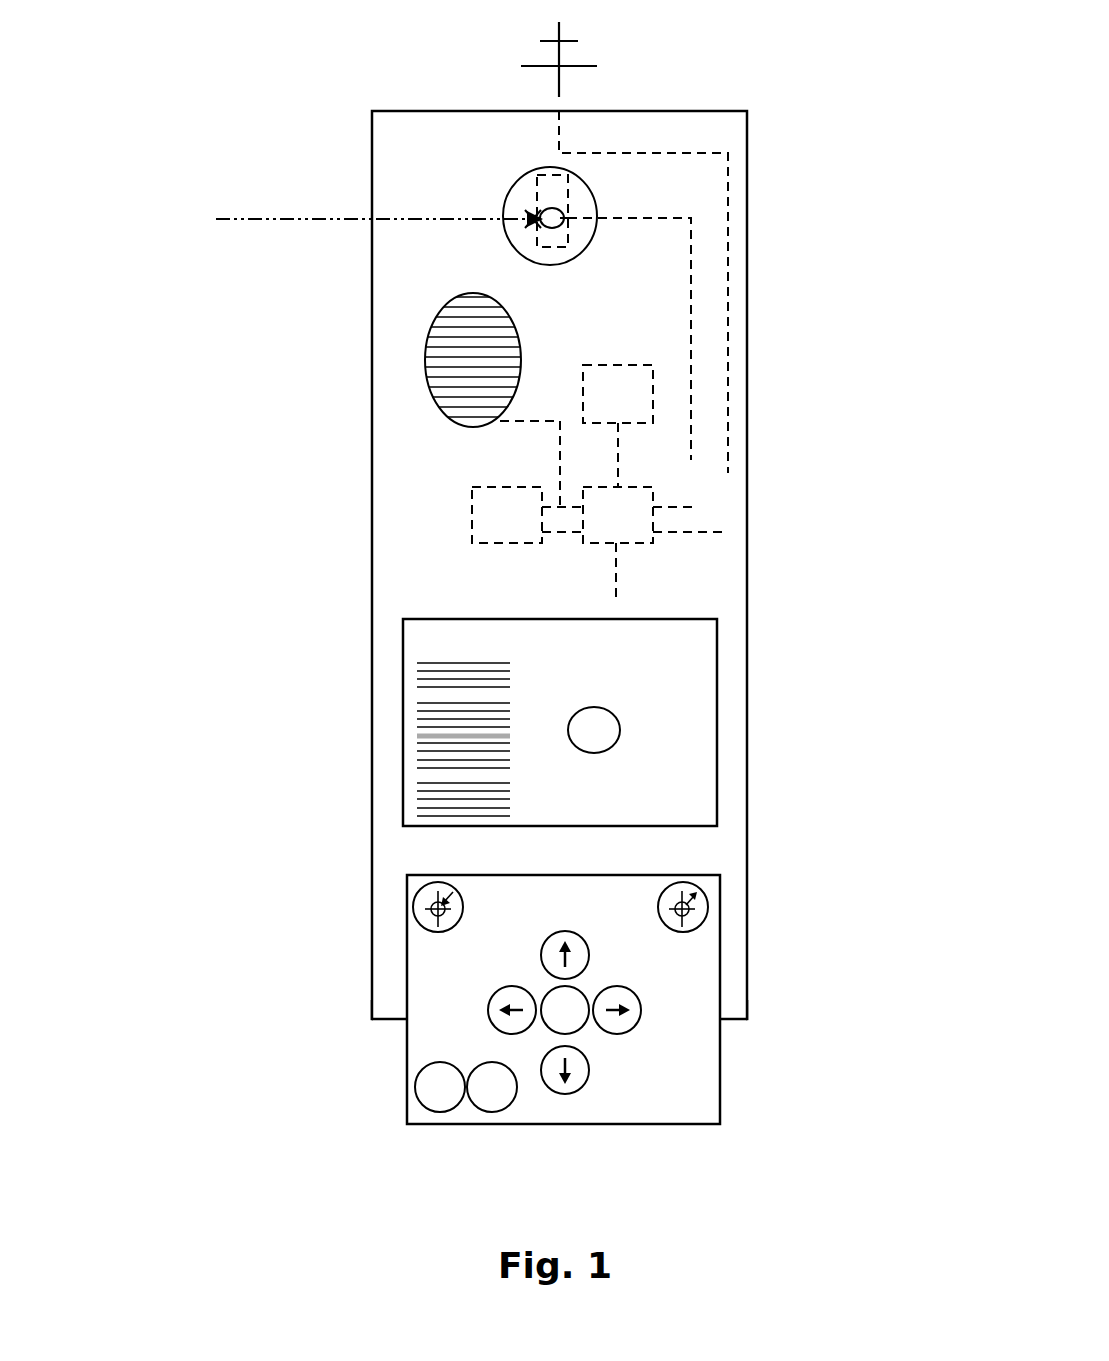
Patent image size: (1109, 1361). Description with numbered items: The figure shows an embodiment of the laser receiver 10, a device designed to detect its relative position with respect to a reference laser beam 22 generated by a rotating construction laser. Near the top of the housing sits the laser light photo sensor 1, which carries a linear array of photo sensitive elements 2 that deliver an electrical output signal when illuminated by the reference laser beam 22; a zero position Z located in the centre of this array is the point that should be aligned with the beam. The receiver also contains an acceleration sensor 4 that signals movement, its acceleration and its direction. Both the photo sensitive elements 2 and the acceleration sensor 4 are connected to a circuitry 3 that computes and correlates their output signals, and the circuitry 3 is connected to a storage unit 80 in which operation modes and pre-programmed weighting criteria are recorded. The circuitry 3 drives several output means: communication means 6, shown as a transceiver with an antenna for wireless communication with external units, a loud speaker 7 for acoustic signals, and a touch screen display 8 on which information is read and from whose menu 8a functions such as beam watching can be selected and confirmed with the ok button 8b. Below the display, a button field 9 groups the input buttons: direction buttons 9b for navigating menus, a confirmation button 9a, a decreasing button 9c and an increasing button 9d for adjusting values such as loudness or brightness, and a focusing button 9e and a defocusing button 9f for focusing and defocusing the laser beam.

The laser light photo sensor 1 is at (513, 240).
The photo sensitive elements 2 is at (537, 192).
The circuitry 3 is at (633, 532).
The acceleration sensor 4 is at (483, 505).
The communication means 6 is at (540, 59).
The loud speaker 7 is at (448, 407).
The display 8 is at (665, 661).
The menu 8a is at (425, 703).
The ok button 8b is at (603, 748).
The button field 9 is at (484, 917).
The confirmation button 9a is at (577, 1022).
The direction buttons 9b is at (580, 960).
The decreasing button 9c is at (433, 1100).
The increasing button 9d is at (485, 1105).
The focusing button 9e is at (420, 923).
The defocusing button 9f is at (702, 918).
The laser receiver 10 is at (678, 90).
The reference laser beam 22 is at (263, 221).
The storage unit 80 is at (640, 403).
The zero position Z is at (560, 218).